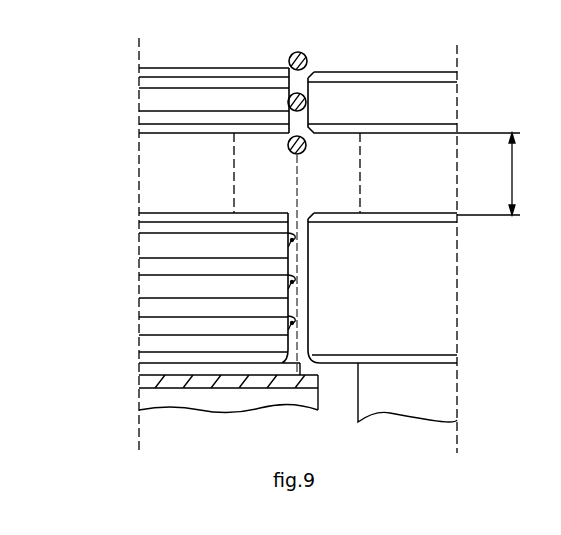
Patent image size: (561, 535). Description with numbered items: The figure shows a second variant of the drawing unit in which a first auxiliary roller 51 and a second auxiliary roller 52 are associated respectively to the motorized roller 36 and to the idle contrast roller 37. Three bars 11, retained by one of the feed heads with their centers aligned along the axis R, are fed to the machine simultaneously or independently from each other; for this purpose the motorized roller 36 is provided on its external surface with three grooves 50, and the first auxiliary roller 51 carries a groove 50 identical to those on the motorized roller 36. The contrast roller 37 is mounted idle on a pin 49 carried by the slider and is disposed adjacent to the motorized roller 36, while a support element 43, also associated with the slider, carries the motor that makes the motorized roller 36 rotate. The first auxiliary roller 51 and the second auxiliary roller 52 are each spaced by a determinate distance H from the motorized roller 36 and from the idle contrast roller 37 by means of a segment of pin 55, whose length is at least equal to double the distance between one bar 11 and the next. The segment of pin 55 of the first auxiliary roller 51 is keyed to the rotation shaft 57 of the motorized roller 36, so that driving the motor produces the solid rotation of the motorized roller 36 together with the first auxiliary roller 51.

The bar 11 is at (302, 62).
The motorized roller 36 is at (143, 232).
The contrast roller 37 is at (432, 260).
The support element 43 is at (142, 380).
The pin 49 is at (440, 390).
The groove 50 is at (299, 103).
The first auxiliary roller 51 is at (172, 70).
The second auxiliary roller 52 is at (410, 94).
The segment of pin 55 is at (154, 153).
The rotation shaft 57 is at (295, 370).
The axis R is at (297, 45).
The distance H is at (495, 174).